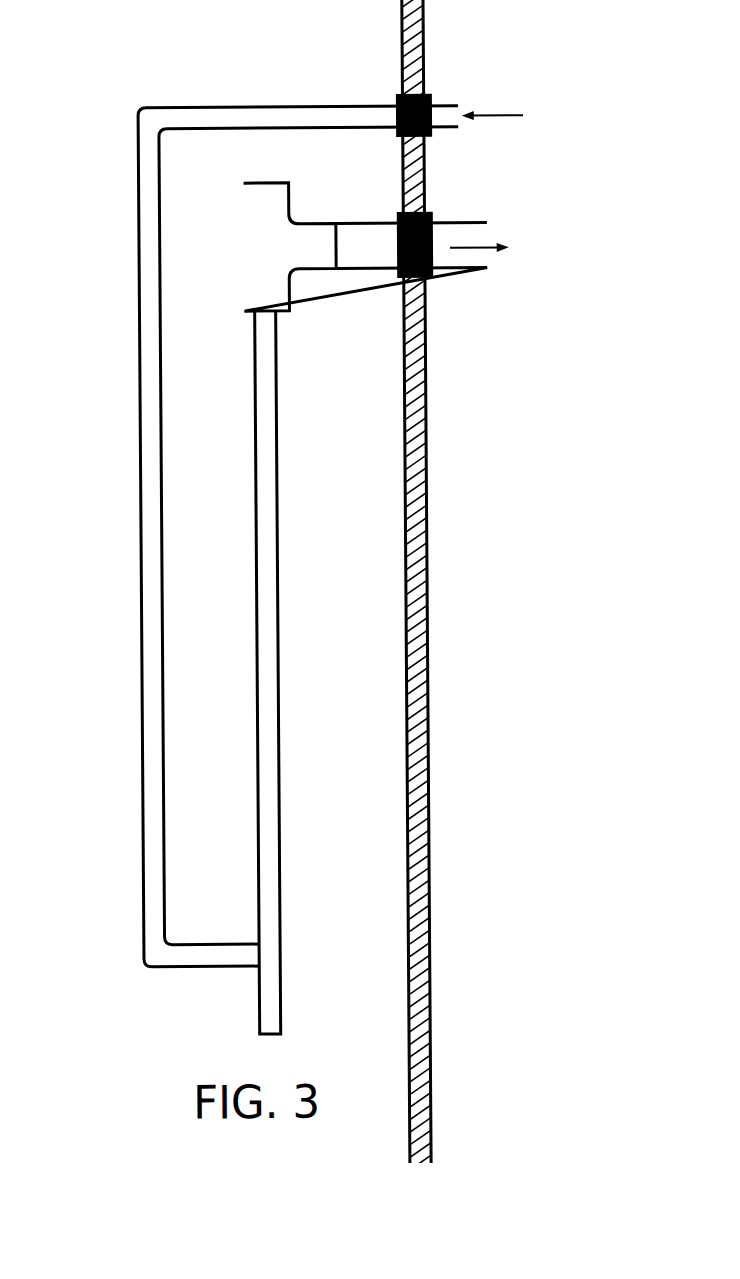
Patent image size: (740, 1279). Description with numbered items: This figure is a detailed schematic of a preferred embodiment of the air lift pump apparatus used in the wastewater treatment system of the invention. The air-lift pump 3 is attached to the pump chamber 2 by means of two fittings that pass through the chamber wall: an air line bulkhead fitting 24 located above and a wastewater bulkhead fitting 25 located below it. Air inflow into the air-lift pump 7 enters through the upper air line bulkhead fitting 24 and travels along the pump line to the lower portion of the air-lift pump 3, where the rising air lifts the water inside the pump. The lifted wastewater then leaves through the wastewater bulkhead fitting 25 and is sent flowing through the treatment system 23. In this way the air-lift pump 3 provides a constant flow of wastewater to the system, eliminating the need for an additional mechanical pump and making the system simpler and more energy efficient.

The pump chamber 2 is at (427, 568).
The air-lift pump 3 is at (136, 528).
The air inflow into the air-lift pump 7 is at (505, 113).
The wastewater flowing through the treatment system 23 is at (509, 236).
The air line bulkhead fitting 24 is at (429, 93).
The wastewater bulkhead fitting 25 is at (430, 270).